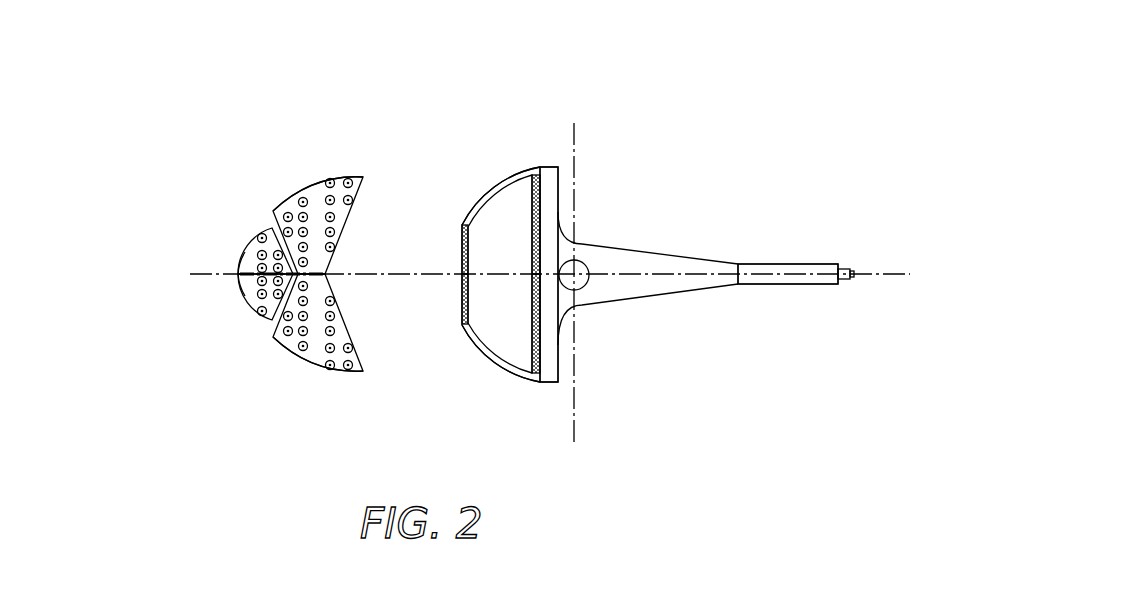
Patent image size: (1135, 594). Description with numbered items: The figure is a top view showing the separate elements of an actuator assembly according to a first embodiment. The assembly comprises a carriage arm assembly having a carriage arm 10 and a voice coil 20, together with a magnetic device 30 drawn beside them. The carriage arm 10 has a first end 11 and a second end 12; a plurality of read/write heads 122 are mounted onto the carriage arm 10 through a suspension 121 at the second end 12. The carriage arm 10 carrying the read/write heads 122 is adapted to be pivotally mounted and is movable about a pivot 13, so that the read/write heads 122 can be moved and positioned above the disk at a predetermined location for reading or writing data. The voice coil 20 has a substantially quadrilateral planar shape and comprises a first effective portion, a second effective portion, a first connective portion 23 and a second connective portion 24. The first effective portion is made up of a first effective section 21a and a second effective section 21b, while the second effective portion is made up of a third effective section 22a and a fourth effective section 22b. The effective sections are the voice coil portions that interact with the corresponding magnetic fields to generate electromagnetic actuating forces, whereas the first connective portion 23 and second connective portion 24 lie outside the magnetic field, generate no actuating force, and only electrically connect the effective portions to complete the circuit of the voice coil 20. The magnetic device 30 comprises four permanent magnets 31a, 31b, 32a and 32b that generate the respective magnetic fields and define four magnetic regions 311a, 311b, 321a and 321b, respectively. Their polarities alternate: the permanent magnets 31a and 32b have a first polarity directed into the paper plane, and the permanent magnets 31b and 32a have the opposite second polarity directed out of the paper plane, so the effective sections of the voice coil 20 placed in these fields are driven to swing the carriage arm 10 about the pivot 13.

The carriage arm 10 is at (689, 308).
The first end 11 is at (548, 248).
The second end 12 is at (716, 268).
The suspension 121 is at (797, 278).
The read/write heads 122 is at (853, 272).
The pivot 13 is at (586, 267).
The voice coil 20 is at (519, 389).
The first effective section 21a is at (529, 226).
The second effective section 21b is at (540, 333).
The third effective section 22a is at (461, 245).
The fourth effective section 22b is at (462, 290).
The first connective portion 23 is at (503, 178).
The second connective portion 24 is at (493, 360).
The magnetic device 30 is at (247, 127).
The permanent magnet 31a is at (341, 176).
The permanent magnet 31b is at (341, 373).
The magnetic region 311a is at (292, 198).
The magnetic region 311b is at (293, 350).
The permanent magnet 32a is at (252, 244).
The permanent magnet 32b is at (253, 312).
The magnetic region 321a is at (235, 268).
The magnetic region 321b is at (237, 284).